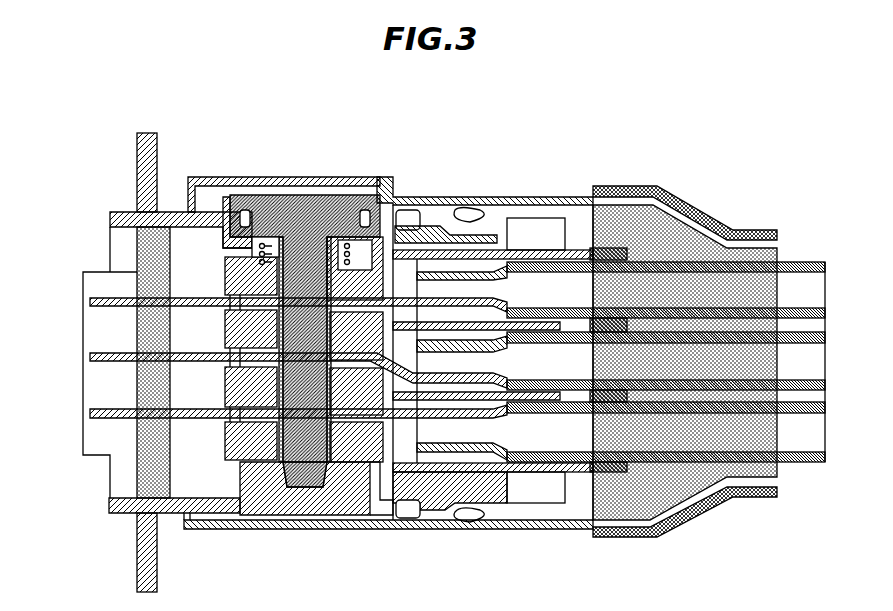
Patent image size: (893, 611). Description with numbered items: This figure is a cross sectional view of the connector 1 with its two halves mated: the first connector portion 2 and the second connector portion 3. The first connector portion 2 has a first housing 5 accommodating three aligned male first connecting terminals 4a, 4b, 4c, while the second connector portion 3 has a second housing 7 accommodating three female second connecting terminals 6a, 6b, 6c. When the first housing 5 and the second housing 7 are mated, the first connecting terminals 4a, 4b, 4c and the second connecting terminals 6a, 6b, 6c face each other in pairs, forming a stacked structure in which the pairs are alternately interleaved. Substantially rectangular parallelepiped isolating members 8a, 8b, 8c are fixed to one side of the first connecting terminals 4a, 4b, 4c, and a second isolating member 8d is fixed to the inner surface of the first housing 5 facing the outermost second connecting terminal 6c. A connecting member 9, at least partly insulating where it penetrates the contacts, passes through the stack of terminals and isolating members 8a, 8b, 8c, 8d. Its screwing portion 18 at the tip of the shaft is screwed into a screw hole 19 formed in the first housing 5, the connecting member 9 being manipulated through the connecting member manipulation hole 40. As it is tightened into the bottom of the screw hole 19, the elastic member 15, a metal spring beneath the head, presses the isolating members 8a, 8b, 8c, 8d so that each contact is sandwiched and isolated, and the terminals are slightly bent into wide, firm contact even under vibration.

The connector 1 is at (257, 98).
The first connector portion 2 is at (122, 208).
The second connector portion 3 is at (533, 193).
The first connecting terminal 4a is at (100, 296).
The first connecting terminal 4b is at (100, 352).
The first connecting terminal 4c is at (100, 408).
The first housing 5 is at (164, 212).
The second connecting terminal 6a is at (402, 242).
The second connecting terminal 6b is at (413, 384).
The second connecting terminal 6c is at (450, 418).
The second housing 7 is at (448, 197).
The first isolating member 8a is at (225, 260).
The first isolating member 8b is at (225, 332).
The first isolating member 8c is at (225, 386).
The second isolating member 8d is at (225, 445).
The connecting member 9 is at (306, 193).
The elastic member 15 is at (274, 244).
The screwing portion 18 is at (333, 470).
The screw hole 19 is at (291, 488).
The connecting member manipulation hole 40 is at (252, 178).